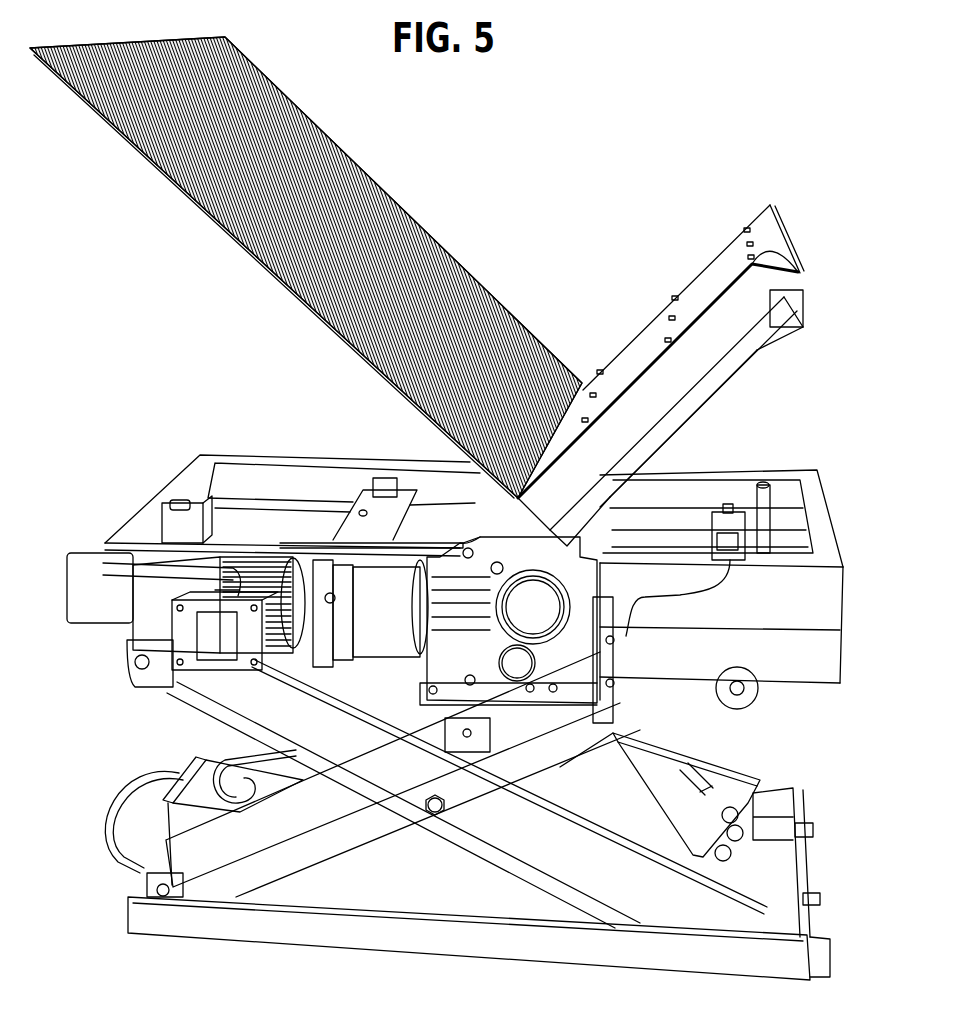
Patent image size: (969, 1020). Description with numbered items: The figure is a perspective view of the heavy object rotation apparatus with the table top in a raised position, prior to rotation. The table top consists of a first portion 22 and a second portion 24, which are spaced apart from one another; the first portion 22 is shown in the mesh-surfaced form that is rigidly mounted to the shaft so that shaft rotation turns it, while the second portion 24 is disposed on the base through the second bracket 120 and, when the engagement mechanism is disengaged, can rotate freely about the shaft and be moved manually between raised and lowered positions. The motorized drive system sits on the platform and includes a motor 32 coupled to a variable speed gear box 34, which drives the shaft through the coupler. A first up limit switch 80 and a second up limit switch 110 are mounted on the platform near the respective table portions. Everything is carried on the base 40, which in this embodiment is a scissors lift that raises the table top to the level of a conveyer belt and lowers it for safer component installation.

The first portion 22 is at (302, 130).
The second portion 24 is at (735, 307).
The second bracket 120 is at (705, 405).
The second up limit switch 110 is at (733, 548).
The first up limit switch 80 is at (172, 527).
The motor 32 is at (192, 647).
The variable speed gear box 34 is at (538, 617).
The base 40 is at (790, 660).